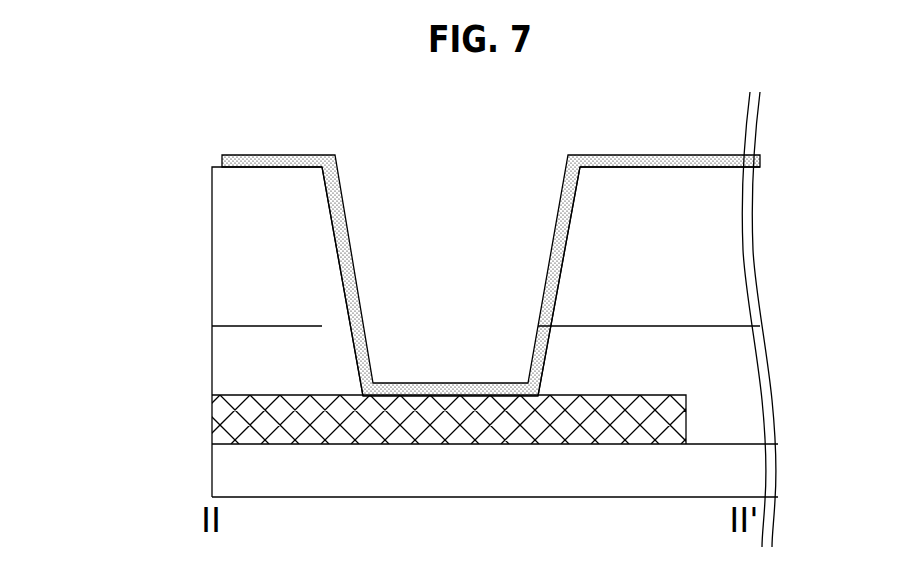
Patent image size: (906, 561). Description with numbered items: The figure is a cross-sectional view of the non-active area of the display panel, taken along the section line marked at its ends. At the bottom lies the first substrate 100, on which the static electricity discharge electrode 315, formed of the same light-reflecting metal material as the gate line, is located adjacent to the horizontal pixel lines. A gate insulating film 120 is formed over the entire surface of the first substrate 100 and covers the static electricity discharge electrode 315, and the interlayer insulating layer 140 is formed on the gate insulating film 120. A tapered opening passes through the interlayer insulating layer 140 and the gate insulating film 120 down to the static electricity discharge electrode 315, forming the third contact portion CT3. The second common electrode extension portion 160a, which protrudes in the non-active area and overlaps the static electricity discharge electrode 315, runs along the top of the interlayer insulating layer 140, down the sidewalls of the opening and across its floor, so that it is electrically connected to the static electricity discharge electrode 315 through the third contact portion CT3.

The first substrate 100 is at (232, 473).
The static electricity discharge electrode 315 is at (232, 420).
The gate insulating film 120 is at (232, 365).
The interlayer insulating layer 140 is at (232, 290).
The second common electrode extension portion 160a is at (277, 162).
The third contact portion CT3 is at (480, 350).